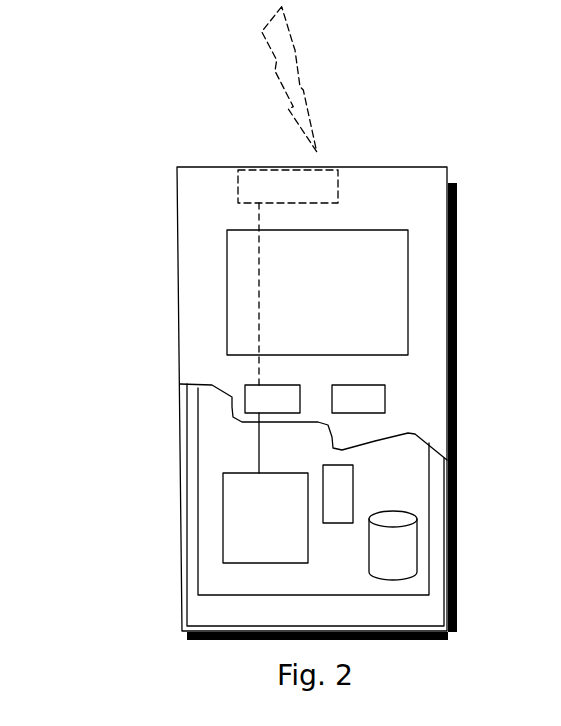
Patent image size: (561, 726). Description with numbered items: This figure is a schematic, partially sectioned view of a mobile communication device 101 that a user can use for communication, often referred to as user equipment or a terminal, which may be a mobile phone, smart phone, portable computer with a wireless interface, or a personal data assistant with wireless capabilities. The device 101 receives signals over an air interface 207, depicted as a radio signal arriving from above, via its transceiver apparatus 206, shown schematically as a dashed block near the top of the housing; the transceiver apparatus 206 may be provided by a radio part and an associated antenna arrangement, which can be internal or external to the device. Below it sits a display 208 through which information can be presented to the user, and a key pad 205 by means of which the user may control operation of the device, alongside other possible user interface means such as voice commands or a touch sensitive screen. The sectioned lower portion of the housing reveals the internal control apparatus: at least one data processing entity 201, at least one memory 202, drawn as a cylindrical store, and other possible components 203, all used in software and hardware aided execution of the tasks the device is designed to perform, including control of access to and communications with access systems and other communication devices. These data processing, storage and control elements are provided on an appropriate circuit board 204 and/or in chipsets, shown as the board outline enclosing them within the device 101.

The communication device 101 is at (180, 207).
The data processing entity 201 is at (230, 502).
The memory 202 is at (387, 555).
The other possible components 203 is at (337, 480).
The circuit board 204 is at (225, 578).
The key pad 205 is at (244, 398).
The transceiver apparatus 206 is at (332, 184).
The air interface 207 is at (317, 108).
The display 208 is at (243, 280).